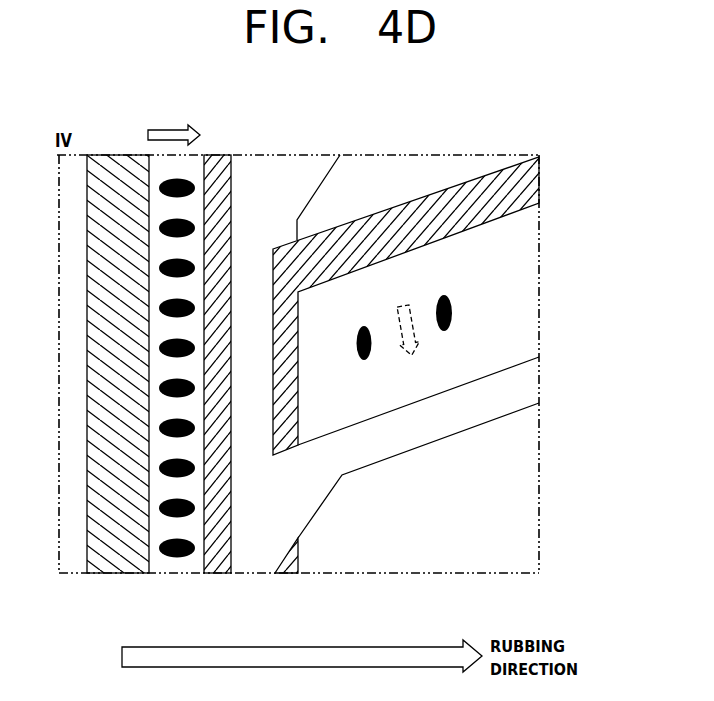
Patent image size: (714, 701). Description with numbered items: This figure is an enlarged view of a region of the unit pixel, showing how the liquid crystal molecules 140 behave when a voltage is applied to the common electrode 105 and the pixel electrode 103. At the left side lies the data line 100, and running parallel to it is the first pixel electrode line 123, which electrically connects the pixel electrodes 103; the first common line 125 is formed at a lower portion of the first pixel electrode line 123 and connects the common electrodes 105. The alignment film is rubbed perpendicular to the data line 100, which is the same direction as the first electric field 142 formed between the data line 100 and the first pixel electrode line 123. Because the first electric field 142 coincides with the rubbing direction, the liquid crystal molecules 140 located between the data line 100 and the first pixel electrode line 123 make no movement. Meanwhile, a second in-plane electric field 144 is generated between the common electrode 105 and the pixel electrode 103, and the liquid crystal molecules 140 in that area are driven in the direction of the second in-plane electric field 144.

The data line 100 is at (120, 575).
The pixel electrode 103 is at (533, 387).
The common electrode 105 is at (539, 180).
The first pixel electrode line 123 is at (258, 565).
The first common line 125 is at (222, 575).
The liquid crystal molecules 140 is at (177, 557).
The first electric field 142 is at (170, 133).
The second in-plane electric field 144 is at (417, 340).